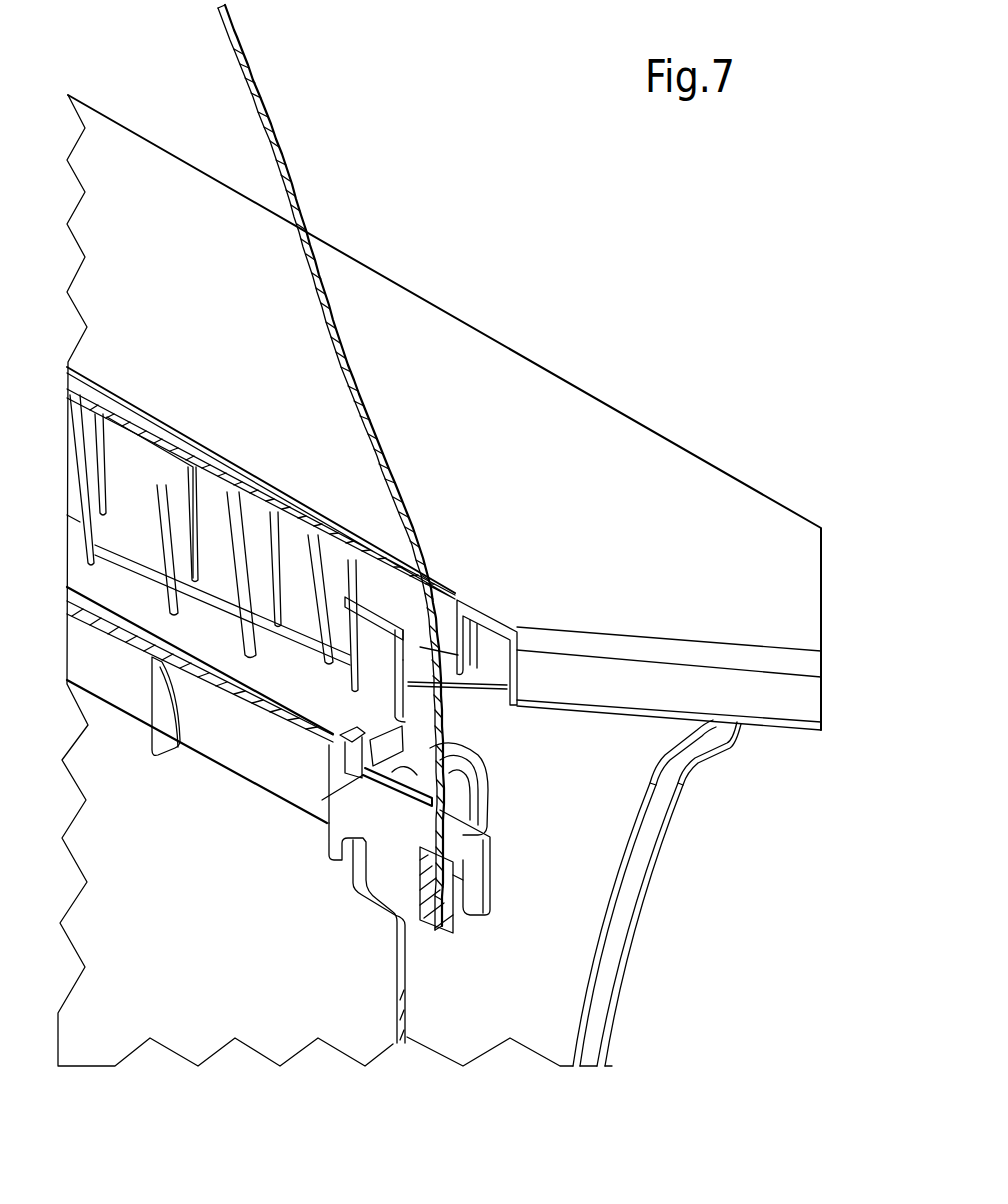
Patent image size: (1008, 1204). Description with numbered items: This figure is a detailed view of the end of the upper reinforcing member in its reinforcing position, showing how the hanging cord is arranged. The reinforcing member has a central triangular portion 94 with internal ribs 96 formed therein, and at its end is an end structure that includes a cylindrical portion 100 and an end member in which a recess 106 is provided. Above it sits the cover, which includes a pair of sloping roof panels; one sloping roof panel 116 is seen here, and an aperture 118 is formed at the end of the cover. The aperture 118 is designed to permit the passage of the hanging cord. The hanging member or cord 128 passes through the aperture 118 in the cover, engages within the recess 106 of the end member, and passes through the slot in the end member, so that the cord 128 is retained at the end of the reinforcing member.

The central triangular portion 94 is at (254, 763).
The internal ribs 96 is at (152, 742).
The cylindrical portion 100 is at (345, 803).
The recess 106 is at (465, 910).
The sloping roof panel 116 is at (520, 480).
The aperture 118 is at (455, 587).
The hanging member or cord 128 is at (287, 187).